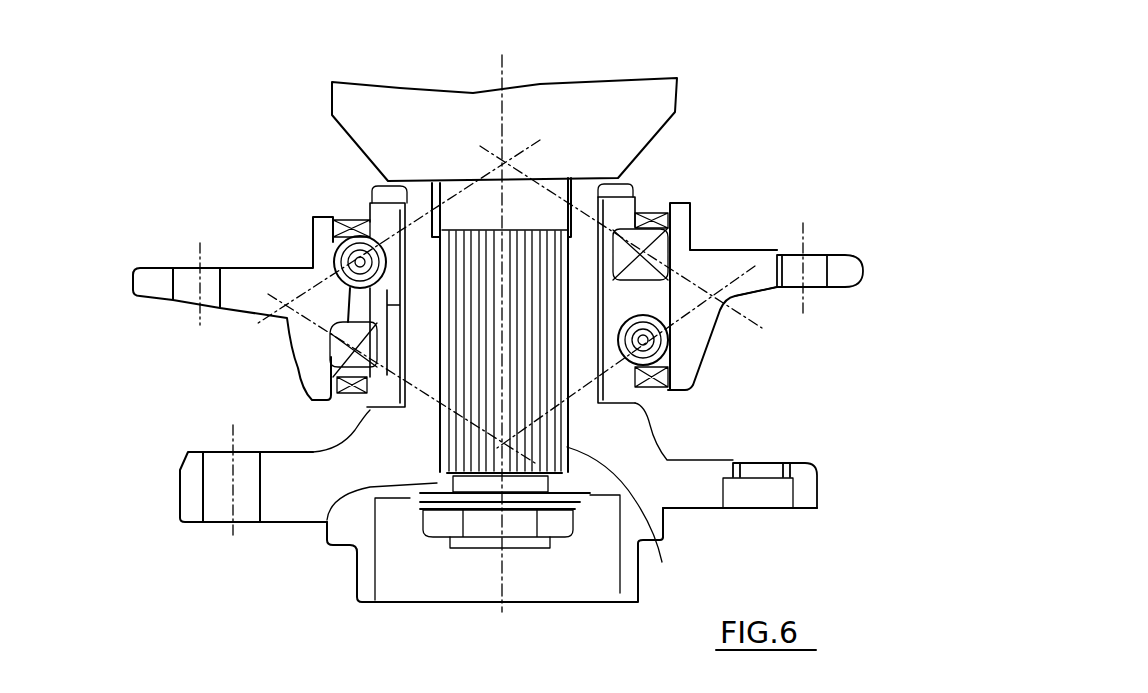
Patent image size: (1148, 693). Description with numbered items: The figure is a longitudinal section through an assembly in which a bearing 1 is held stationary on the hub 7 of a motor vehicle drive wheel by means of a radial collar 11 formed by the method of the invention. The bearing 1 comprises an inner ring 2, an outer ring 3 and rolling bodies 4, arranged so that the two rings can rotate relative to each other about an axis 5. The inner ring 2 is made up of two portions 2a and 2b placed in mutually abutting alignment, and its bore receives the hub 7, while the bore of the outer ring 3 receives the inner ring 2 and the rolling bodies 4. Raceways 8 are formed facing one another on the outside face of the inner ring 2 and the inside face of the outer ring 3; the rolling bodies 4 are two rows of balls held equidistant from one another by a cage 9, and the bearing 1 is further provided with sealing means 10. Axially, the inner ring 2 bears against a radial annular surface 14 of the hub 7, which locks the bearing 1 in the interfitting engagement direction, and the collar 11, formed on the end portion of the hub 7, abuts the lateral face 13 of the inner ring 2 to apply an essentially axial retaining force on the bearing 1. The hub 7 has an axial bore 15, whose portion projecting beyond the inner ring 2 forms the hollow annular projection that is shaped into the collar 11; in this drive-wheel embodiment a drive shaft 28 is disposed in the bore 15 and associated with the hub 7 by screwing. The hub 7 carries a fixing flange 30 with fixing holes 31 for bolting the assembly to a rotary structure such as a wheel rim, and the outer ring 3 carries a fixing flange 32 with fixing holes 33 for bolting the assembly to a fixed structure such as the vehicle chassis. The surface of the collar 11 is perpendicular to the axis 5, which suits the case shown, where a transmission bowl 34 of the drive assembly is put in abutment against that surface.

The bearing 1 is at (717, 350).
The inner ring 2 is at (333, 398).
The inner ring portion 2a is at (622, 208).
The inner ring portion 2b is at (620, 393).
The outer ring 3 is at (293, 377).
The rolling bodies 4 is at (350, 255).
The axis 5 is at (500, 578).
The hub 7 is at (620, 452).
The raceways 8 is at (330, 350).
The cage 9 is at (268, 320).
The sealing means 10 is at (618, 388).
The radial collar 11 is at (612, 186).
The lateral face 13 is at (380, 187).
The radial annular surface 14 is at (370, 427).
The axial bore 15 is at (322, 523).
The drive shaft 28 is at (554, 385).
The fixing flange 30 is at (700, 513).
The fixing holes 31 is at (777, 493).
The fixing flange 32 is at (727, 267).
The fixing holes 33 is at (813, 267).
The transmission bowl 34 is at (637, 105).